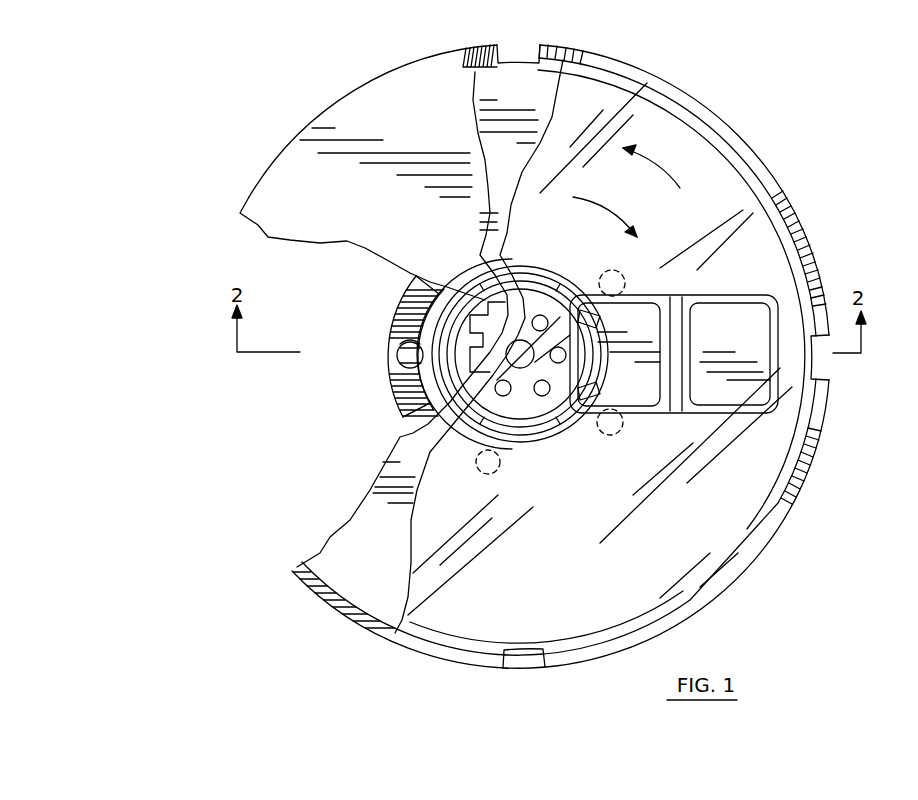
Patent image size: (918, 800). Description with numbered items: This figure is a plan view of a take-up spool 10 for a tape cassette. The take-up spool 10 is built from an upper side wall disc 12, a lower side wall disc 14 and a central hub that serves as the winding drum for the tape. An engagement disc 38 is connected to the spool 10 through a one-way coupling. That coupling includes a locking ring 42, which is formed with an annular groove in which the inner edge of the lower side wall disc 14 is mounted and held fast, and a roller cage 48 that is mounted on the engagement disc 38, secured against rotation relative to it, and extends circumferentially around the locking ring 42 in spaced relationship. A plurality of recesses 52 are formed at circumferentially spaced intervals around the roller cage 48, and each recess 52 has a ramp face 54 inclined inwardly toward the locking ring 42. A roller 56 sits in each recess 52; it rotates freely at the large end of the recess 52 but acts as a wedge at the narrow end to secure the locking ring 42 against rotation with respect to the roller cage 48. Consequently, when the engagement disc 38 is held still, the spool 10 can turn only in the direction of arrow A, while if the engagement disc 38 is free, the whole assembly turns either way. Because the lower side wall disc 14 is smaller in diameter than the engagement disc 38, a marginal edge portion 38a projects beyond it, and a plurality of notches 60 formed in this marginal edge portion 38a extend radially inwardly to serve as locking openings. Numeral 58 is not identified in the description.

The take-up spool 10 is at (558, 355).
The upper side wall disc 12 is at (783, 230).
The lower side wall disc 14 is at (475, 82).
The engagement disc 38 is at (328, 120).
The marginal edge portion 38a is at (563, 54).
The locking ring 42 is at (440, 305).
The roller cage 48 is at (396, 397).
The recesses 52 is at (395, 343).
The ramp face 54 is at (397, 364).
The roller 56 is at (397, 354).
The head 58 is at (403, 337).
The notches 60 is at (511, 52).